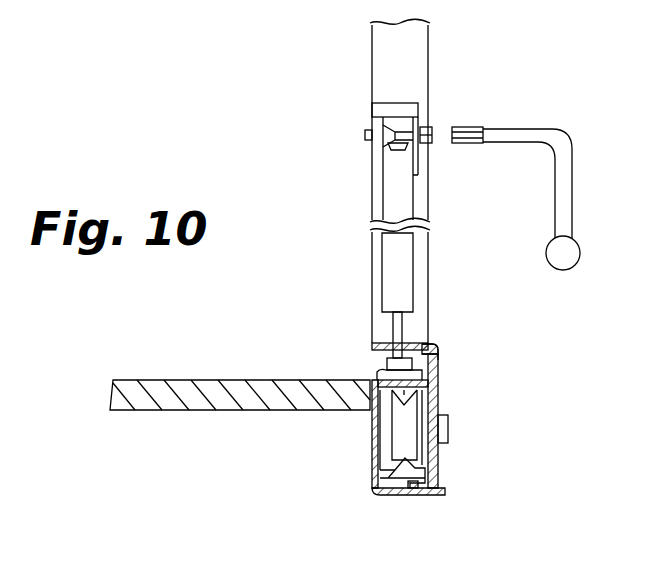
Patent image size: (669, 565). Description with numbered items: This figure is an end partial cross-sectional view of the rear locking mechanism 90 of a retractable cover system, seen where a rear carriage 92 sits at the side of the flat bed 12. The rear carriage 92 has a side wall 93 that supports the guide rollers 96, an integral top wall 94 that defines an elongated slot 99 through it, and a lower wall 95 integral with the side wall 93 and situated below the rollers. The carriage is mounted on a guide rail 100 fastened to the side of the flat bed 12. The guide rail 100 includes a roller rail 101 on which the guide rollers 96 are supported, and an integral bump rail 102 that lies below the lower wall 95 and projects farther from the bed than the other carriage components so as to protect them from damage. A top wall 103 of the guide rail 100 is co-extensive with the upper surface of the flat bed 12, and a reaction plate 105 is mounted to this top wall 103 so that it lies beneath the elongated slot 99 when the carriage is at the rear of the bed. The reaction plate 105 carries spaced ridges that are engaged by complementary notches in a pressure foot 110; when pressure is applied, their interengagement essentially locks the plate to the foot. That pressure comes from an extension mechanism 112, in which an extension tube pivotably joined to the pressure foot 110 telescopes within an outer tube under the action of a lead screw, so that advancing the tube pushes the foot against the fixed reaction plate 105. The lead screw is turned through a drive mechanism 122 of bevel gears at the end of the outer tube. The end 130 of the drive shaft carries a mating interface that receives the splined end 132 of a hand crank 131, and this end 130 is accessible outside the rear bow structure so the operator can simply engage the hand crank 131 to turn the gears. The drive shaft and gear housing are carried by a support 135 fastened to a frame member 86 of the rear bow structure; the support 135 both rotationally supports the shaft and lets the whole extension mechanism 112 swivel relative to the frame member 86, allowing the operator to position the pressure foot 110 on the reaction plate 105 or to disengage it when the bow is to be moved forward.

The flat bed 12 is at (188, 392).
The frame member 86 is at (410, 65).
The latch assembly 90 is at (368, 218).
The rear carriage 92 is at (445, 372).
The side wall 93 is at (437, 402).
The top wall 94 is at (427, 330).
The lower wall 95 is at (417, 488).
The guide rollers 96 is at (395, 428).
The elongated slot 99 is at (418, 340).
The guide rail 100 is at (368, 470).
The roller rail 101 is at (412, 453).
The bump rail 102 is at (390, 495).
The top wall 103 is at (377, 374).
The reaction plate 105 is at (382, 366).
The pressure foot 110 is at (437, 352).
The extension mechanism 112 is at (388, 187).
The drive mechanism 122 is at (386, 127).
The end of the drive shaft 130 is at (433, 132).
The hand crank 131 is at (565, 185).
The splined end 132 is at (467, 143).
The support 135 is at (390, 108).